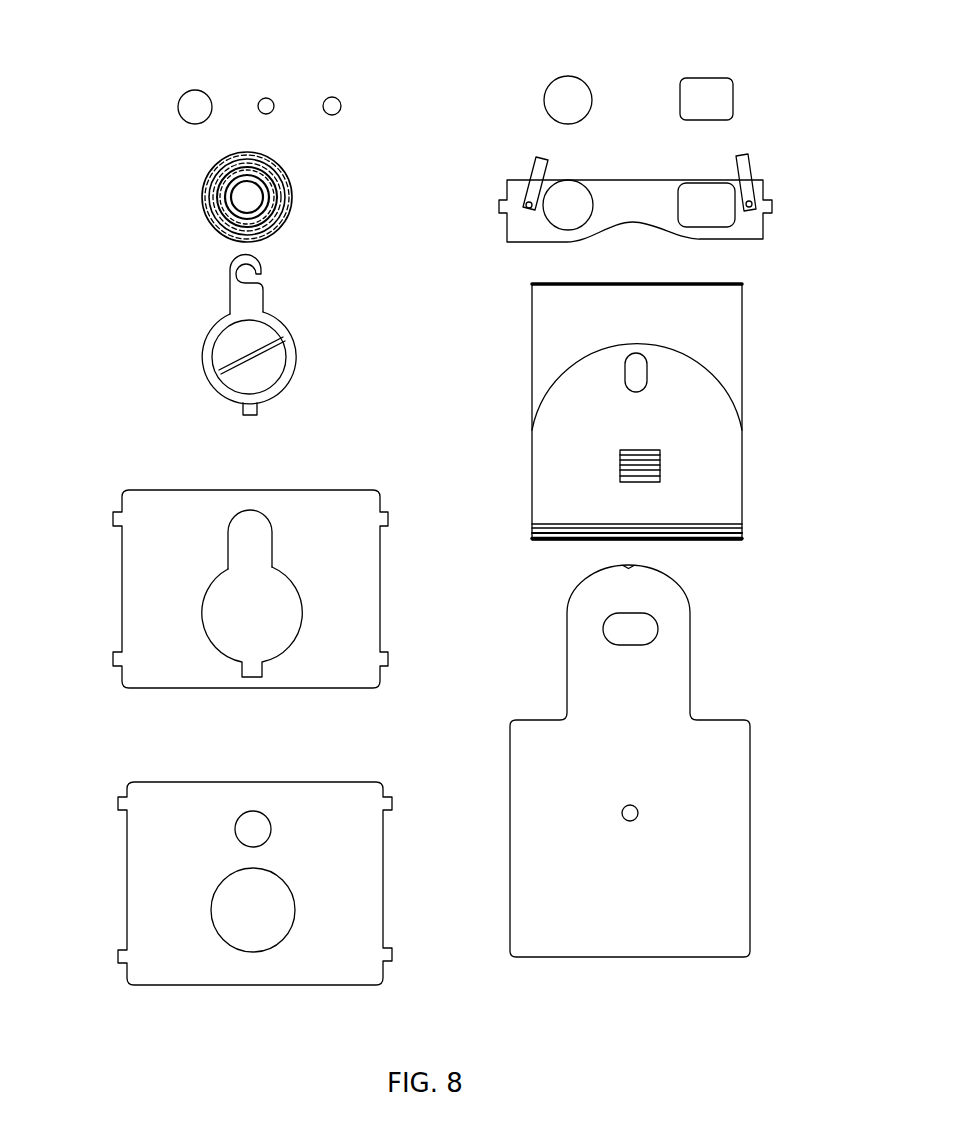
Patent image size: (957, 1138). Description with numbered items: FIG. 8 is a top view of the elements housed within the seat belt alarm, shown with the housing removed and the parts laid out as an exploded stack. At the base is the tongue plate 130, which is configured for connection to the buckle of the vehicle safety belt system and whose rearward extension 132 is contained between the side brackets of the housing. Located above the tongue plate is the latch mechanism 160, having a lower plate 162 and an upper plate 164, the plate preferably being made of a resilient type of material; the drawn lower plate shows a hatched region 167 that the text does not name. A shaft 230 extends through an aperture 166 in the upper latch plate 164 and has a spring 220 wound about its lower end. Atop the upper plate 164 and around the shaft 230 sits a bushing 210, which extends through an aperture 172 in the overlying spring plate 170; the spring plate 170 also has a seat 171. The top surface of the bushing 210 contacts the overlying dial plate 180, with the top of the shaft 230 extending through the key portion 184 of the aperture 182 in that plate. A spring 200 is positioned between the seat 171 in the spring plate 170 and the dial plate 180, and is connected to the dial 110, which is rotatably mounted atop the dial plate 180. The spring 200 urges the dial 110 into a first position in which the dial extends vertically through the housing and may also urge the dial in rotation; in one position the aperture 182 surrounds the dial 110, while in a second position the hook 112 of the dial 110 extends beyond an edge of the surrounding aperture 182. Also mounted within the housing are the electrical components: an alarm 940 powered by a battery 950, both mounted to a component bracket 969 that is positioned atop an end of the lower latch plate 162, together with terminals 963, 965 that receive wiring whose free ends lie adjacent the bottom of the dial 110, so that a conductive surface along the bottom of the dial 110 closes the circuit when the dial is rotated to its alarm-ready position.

The dial 110 is at (259, 319).
The hook 112 is at (235, 262).
The tongue plate 130 is at (666, 761).
The rearward extension 132 is at (728, 832).
The latch mechanism 160 is at (702, 412).
The lower plate 162 is at (737, 323).
The upper plate 164 is at (727, 495).
The aperture 166 is at (627, 358).
The label indicia area 167 is at (662, 463).
The spring plate 170 is at (257, 891).
The seat 171 is at (293, 903).
The aperture 172 is at (270, 820).
The dial plate 180 is at (210, 572).
The aperture 182 is at (302, 610).
The key portion 184 is at (272, 532).
The spring 200 is at (292, 193).
The bushing 210 is at (193, 92).
The spring 220 is at (342, 102).
The shaft 230 is at (273, 100).
The alarm 940 is at (690, 78).
The battery 950 is at (570, 75).
The terminal 963 is at (545, 160).
The terminal 965 is at (747, 155).
The component bracket 969 is at (685, 193).